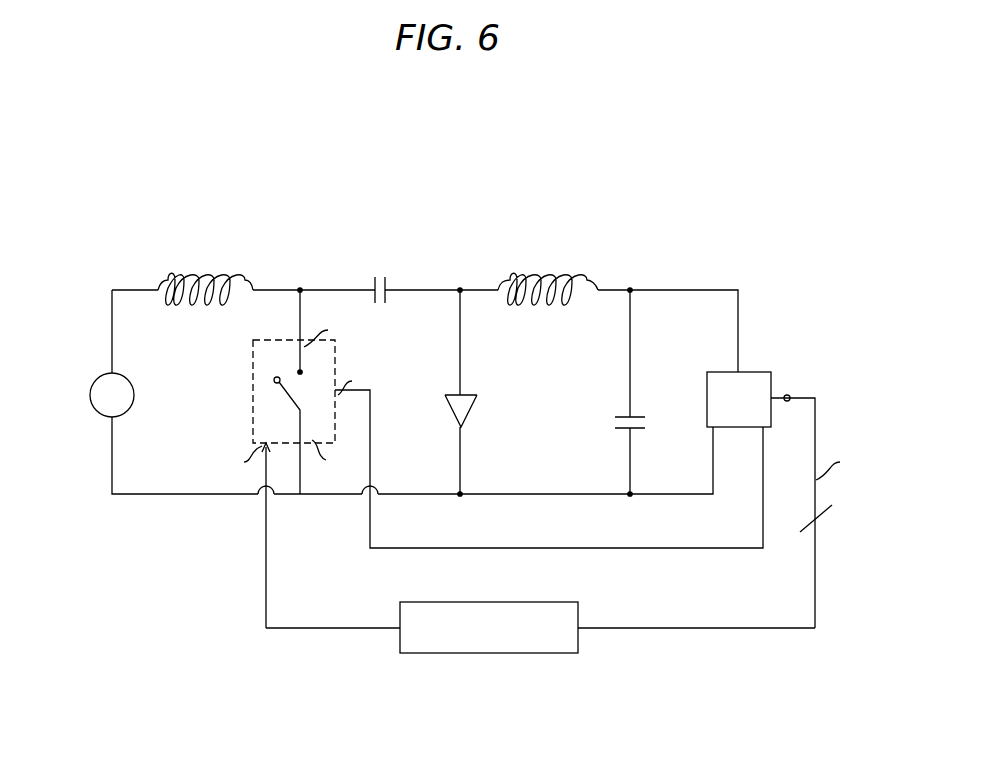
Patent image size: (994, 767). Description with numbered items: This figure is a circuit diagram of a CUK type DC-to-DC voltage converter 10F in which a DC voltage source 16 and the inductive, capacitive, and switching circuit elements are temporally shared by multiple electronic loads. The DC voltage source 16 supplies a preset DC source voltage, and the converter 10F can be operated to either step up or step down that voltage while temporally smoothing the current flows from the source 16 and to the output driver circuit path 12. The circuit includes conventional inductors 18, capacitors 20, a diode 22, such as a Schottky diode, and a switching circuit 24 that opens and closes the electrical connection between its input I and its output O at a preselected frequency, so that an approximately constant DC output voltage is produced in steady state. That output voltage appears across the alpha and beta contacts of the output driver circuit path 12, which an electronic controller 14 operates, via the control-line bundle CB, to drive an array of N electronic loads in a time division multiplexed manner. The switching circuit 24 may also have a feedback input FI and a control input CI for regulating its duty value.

The DC-to-DC voltage converter 10F is at (766, 172).
The output driver circuit path 12 is at (793, 485).
The electronic controller 14 is at (580, 608).
The DC voltage source 16 is at (96, 412).
The inductor 18 is at (196, 262).
The capacitor 20 is at (374, 262).
The diode 22 is at (450, 410).
The switching circuit 24 is at (252, 364).